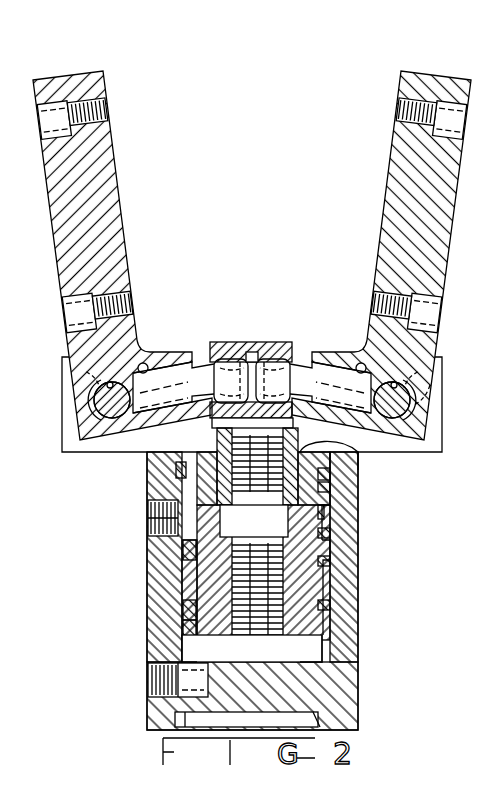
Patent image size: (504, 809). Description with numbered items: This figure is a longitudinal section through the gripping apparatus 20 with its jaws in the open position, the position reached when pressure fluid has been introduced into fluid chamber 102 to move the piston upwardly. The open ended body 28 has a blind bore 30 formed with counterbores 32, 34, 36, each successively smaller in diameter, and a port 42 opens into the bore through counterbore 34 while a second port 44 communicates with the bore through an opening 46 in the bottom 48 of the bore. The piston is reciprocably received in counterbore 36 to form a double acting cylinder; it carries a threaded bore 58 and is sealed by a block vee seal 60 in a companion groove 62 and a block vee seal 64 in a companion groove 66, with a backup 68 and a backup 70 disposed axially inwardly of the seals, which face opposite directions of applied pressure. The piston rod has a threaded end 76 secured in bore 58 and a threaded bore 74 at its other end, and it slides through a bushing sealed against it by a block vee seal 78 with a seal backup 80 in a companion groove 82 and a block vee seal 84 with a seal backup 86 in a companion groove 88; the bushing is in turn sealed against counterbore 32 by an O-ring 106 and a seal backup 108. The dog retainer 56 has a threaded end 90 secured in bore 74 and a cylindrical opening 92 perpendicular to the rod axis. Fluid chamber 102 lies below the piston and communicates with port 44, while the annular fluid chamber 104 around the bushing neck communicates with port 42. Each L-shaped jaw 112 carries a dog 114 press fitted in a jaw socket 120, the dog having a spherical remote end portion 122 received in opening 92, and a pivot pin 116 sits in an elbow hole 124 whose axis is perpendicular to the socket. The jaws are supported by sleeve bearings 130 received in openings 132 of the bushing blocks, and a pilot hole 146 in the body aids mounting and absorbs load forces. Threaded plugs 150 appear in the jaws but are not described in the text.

The gripping apparatus 20 is at (447, 44).
The open ended body 28 is at (358, 697).
The blind bore 30 is at (352, 507).
The counterbore 32 is at (360, 455).
The counterbore 34 is at (340, 545).
The counterbore 36 is at (335, 578).
The port 42 is at (150, 512).
The second port 44 is at (160, 687).
The opening 46 is at (197, 648).
The bottom 48 is at (250, 660).
The dog retainer 56 is at (275, 342).
The threaded bore 58 is at (345, 590).
The block vee seal 60 is at (183, 548).
The companion groove 62 is at (345, 562).
The block vee seal 64 is at (188, 622).
The companion groove 66 is at (330, 605).
The backup 68 is at (183, 553).
The backup 70 is at (190, 612).
The threaded bore 74 is at (235, 446).
The threaded end 76 is at (272, 525).
The block vee seal 78 is at (208, 492).
The seal backup 80 is at (180, 467).
The companion groove 82 is at (340, 512).
The block vee seal 84 is at (207, 518).
The seal backup 86 is at (205, 510).
The companion groove 88 is at (318, 556).
The threaded end 90 is at (290, 440).
The cylindrical opening 92 is at (250, 366).
The fluid chamber 102 is at (317, 642).
The annular fluid chamber 104 is at (345, 538).
The O-ring 106 is at (347, 477).
The seal backup 108 is at (345, 482).
The L-shaped jaw 112 is at (103, 183).
The dog 114 is at (167, 377).
The pivot pin 116 is at (97, 392).
The jaw socket 120 is at (145, 364).
The remote end portion 122 is at (240, 345).
The elbow hole 124 is at (110, 383).
The sleeve bearing 130 is at (80, 418).
The opening 132 is at (92, 385).
The pilot hole 146 is at (325, 730).
The threaded plug 150 is at (100, 122).